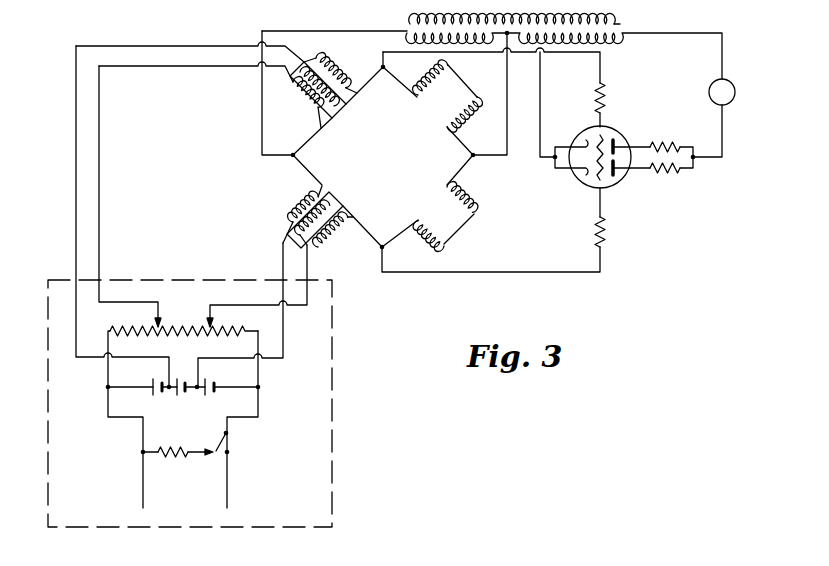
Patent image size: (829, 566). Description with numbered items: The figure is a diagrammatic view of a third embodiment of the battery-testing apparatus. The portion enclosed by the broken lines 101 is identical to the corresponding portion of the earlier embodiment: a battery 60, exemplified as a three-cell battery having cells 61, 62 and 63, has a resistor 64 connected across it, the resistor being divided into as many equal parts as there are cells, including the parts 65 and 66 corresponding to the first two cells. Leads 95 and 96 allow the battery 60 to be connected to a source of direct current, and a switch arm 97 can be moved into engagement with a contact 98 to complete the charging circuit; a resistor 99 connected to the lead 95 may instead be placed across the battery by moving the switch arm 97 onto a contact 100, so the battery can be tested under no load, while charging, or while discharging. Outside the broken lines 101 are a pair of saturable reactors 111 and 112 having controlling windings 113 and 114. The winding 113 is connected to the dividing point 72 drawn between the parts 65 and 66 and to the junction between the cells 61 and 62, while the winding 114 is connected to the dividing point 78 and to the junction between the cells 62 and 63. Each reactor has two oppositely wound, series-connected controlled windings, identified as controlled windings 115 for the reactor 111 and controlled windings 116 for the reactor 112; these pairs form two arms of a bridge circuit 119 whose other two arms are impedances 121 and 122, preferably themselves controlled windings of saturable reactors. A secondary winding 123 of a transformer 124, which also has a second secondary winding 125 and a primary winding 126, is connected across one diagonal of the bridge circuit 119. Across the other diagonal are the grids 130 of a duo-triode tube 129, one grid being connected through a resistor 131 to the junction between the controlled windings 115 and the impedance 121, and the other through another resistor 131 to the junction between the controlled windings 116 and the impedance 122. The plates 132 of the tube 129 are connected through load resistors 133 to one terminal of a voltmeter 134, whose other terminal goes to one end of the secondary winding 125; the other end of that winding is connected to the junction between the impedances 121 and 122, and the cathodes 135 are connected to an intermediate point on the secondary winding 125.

The transformer 124 is at (398, 19).
The primary winding 126 is at (618, 22).
The secondary winding 123 is at (405, 36).
The secondary winding 125 is at (620, 38).
The voltmeter 134 is at (709, 88).
The resistor 131 is at (603, 95).
The duo-triode tube 129 is at (613, 128).
The grid 130 is at (598, 137).
The plate 132 is at (616, 138).
The load resistor 133 is at (672, 143).
The cathode 135 is at (585, 145).
The bridge circuit 119 is at (361, 156).
The impedance 121 is at (432, 92).
The impedance 122 is at (434, 222).
The saturable reactor 111 is at (323, 101).
The controlling winding 113 is at (335, 96).
The controlled windings 115 is at (332, 70).
The saturable reactor 112 is at (321, 217).
The controlling winding 114 is at (333, 200).
The controlled windings 116 is at (297, 208).
The broken lines 101 is at (332, 452).
The resistor 64 is at (177, 336).
The resistor part 65 is at (112, 326).
The resistor part 66 is at (184, 321).
The slider contact 72 is at (160, 327).
The dividing point 78 is at (211, 325).
The battery 60 is at (183, 443).
The cell 61 is at (157, 392).
The cell 62 is at (186, 393).
The cell 63 is at (213, 393).
The lead 95 is at (157, 468).
The resistor 99 is at (170, 456).
The contact 100 is at (210, 454).
The lead 96 is at (219, 462).
The switch arm 97 is at (224, 435).
The contact 98 is at (222, 454).